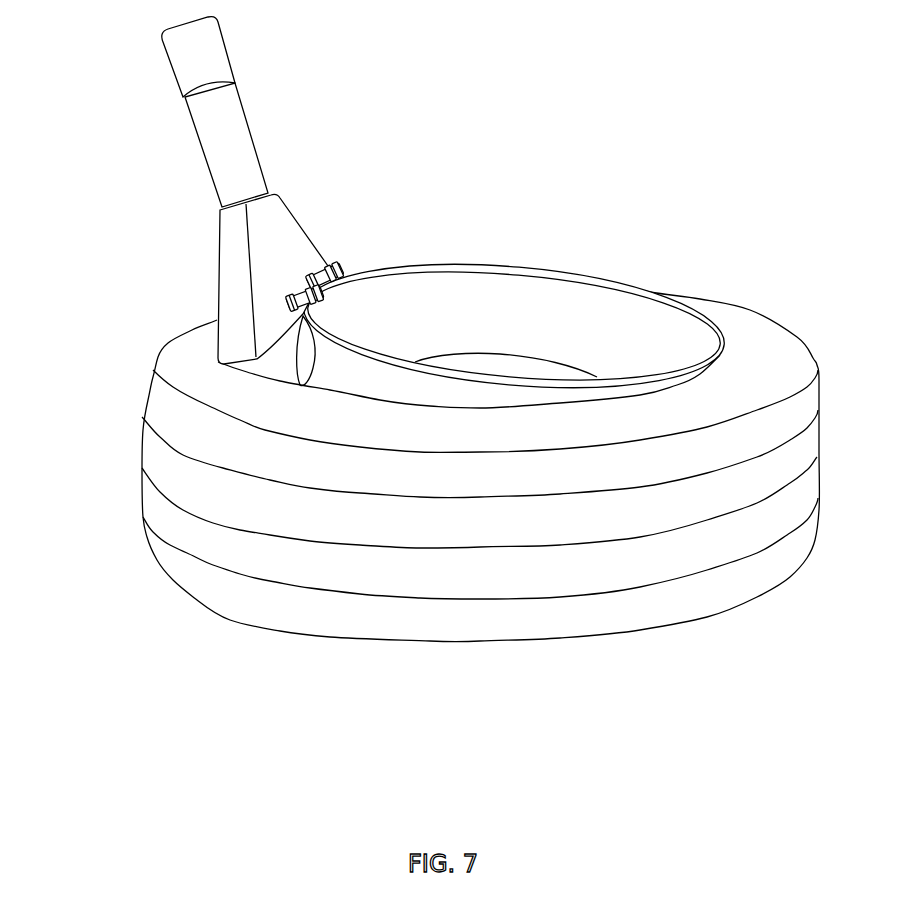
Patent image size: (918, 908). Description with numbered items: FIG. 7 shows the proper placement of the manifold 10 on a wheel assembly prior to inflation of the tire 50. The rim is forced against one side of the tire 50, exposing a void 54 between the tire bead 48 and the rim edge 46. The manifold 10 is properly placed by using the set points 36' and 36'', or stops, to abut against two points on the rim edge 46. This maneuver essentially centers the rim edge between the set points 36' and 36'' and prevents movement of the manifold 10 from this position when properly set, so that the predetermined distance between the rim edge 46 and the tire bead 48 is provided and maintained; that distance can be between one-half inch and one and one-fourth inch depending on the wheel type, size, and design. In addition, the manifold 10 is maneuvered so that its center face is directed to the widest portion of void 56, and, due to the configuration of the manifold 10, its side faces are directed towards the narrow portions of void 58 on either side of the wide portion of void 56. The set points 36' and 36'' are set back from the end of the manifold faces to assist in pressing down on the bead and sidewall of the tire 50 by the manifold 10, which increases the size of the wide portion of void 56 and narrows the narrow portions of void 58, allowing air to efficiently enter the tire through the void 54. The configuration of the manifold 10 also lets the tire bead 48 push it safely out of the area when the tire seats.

The manifold 10 is at (229, 367).
The set point 36' is at (357, 230).
The set point 36'' is at (356, 307).
The rim edge 46 is at (385, 265).
The tire bead 48 is at (243, 361).
The tire 50 is at (482, 442).
The void 54 is at (278, 364).
The widest portion of void 56 is at (296, 343).
The narrow portions of void 58 is at (348, 368).